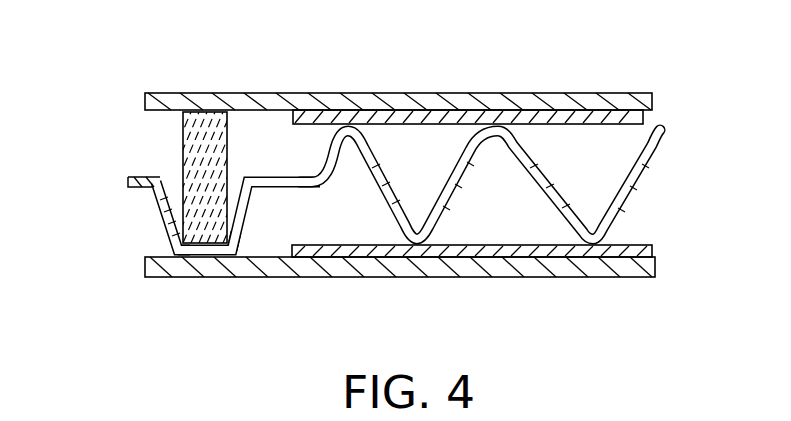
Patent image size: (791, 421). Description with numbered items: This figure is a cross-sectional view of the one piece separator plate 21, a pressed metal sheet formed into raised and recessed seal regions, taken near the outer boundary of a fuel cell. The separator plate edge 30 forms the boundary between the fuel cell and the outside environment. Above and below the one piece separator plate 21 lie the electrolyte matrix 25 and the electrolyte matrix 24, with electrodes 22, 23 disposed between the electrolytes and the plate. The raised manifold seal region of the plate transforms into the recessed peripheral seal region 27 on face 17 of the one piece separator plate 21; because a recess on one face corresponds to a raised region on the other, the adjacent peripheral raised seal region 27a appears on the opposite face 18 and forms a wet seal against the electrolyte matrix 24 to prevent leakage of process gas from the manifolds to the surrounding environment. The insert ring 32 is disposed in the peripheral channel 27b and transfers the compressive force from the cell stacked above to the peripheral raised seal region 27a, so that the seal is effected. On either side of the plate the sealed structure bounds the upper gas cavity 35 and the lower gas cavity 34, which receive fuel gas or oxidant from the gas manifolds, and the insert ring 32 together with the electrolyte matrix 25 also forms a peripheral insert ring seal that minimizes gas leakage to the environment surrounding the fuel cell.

The face 17 is at (138, 174).
The opposite face 18 is at (148, 190).
The one piece separator plate 21 is at (643, 168).
The electrode 22 is at (645, 117).
The electrode 23 is at (654, 245).
The electrolyte matrix 24 is at (287, 278).
The electrolyte matrix 25 is at (323, 93).
The recessed peripheral seal region 27 is at (185, 238).
The peripheral raised seal region 27a is at (219, 256).
The peripheral channel 27b is at (232, 187).
The separator plate edge 30 is at (127, 185).
The insert ring 32 is at (200, 118).
The lower gas cavity 34 is at (312, 230).
The upper gas cavity 35 is at (278, 153).